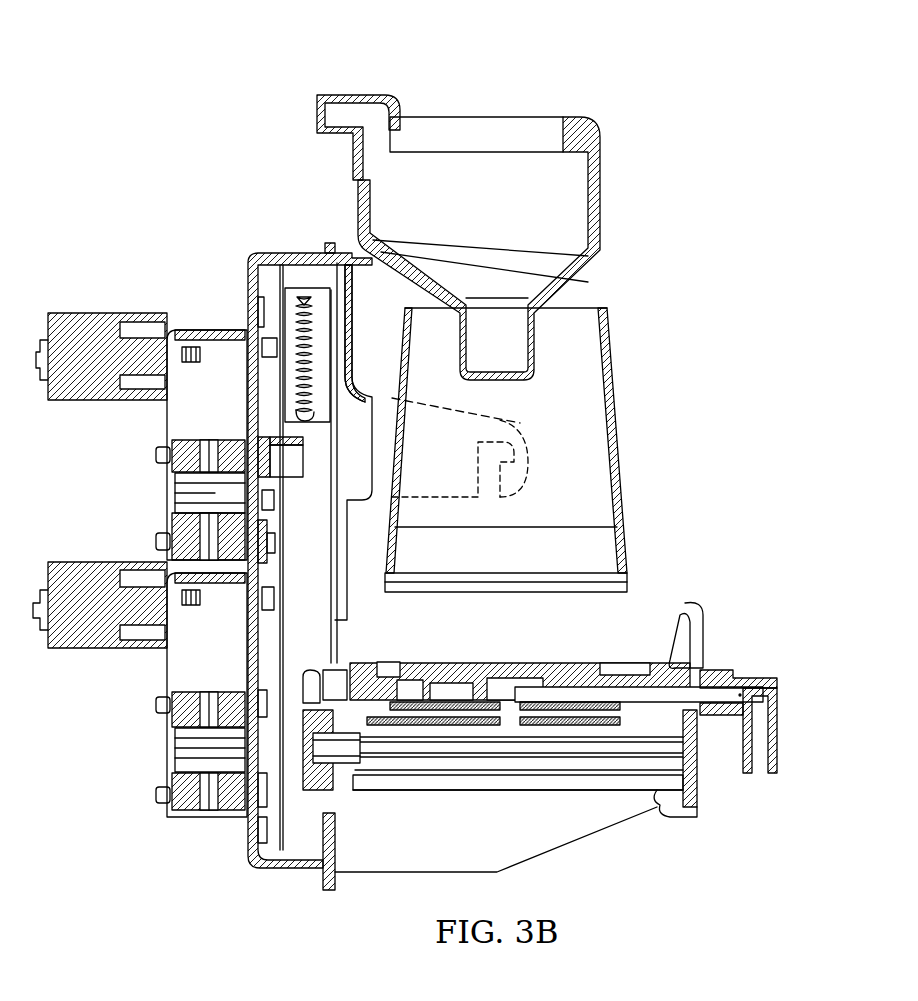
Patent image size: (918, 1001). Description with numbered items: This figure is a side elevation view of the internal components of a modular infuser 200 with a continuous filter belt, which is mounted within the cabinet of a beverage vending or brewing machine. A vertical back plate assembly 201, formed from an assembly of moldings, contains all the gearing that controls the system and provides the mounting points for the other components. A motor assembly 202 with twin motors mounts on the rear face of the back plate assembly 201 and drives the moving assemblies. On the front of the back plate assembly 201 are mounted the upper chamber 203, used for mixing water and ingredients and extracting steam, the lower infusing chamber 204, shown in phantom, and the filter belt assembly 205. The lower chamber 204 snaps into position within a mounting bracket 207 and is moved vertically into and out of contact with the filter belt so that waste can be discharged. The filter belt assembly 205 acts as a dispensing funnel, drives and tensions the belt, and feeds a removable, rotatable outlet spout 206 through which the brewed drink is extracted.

The modular infuser 200 is at (178, 60).
The back plate assembly 201 is at (290, 253).
The motor assembly 202 is at (208, 328).
The upper chamber 203 is at (522, 117).
The lower chamber 204 is at (618, 368).
The filter belt assembly 205 is at (520, 667).
The outlet spout 206 is at (757, 777).
The mounting bracket 207 is at (518, 428).